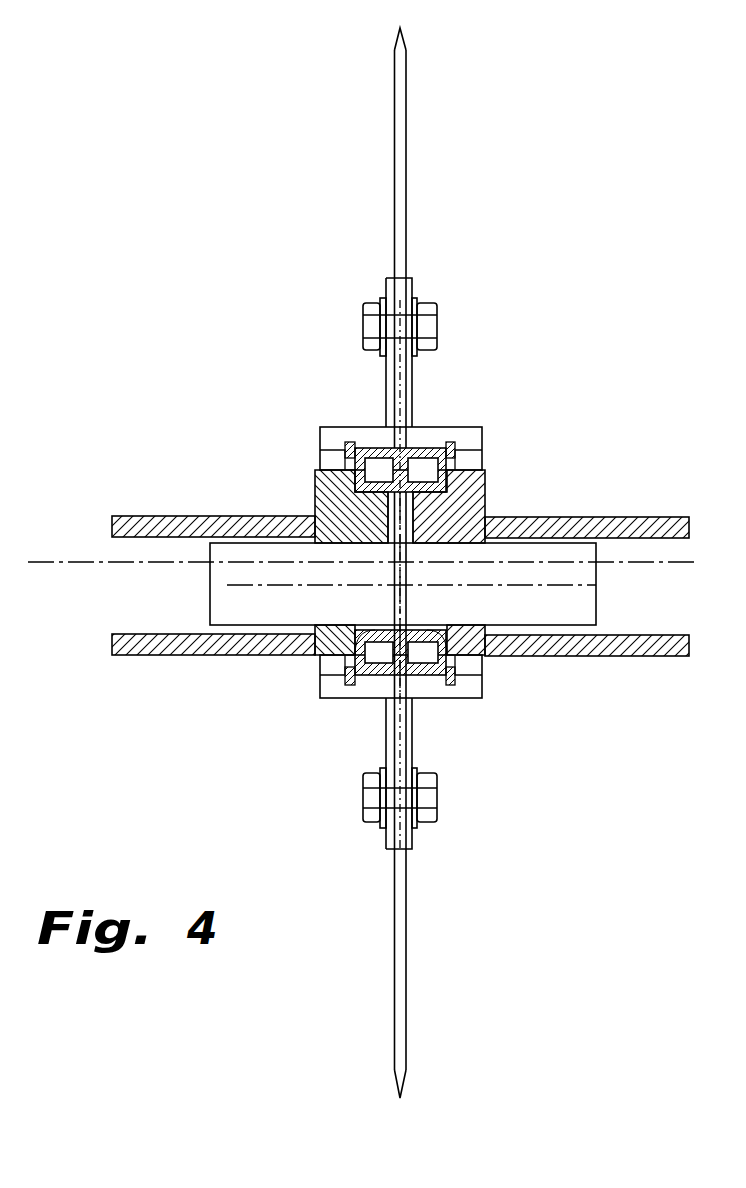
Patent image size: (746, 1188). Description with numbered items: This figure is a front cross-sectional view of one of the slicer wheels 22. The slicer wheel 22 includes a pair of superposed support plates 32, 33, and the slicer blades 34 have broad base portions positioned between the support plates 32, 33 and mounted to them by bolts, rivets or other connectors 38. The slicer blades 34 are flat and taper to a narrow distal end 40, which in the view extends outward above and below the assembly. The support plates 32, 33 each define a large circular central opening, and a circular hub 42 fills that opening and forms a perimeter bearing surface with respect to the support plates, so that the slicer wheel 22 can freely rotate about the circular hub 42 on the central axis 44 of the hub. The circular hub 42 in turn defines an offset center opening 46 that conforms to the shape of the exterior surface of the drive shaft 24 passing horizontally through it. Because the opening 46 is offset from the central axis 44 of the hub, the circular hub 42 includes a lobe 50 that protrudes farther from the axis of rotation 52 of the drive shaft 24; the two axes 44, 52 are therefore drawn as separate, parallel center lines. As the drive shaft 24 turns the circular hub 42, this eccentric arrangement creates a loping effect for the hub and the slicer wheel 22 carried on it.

The slicer wheel 22 is at (463, 168).
The drive shaft 24 is at (577, 607).
The support plate 32 is at (388, 280).
The support plate 33 is at (409, 285).
The slicer blade 34 is at (399, 205).
The connector 38 is at (432, 330).
The narrow distal end 40 is at (400, 29).
The circular hub 42 is at (458, 508).
The central axis 44 is at (83, 562).
The offset center opening 46 is at (335, 545).
The lobe 50 is at (331, 497).
The axis of rotation 52 is at (257, 586).